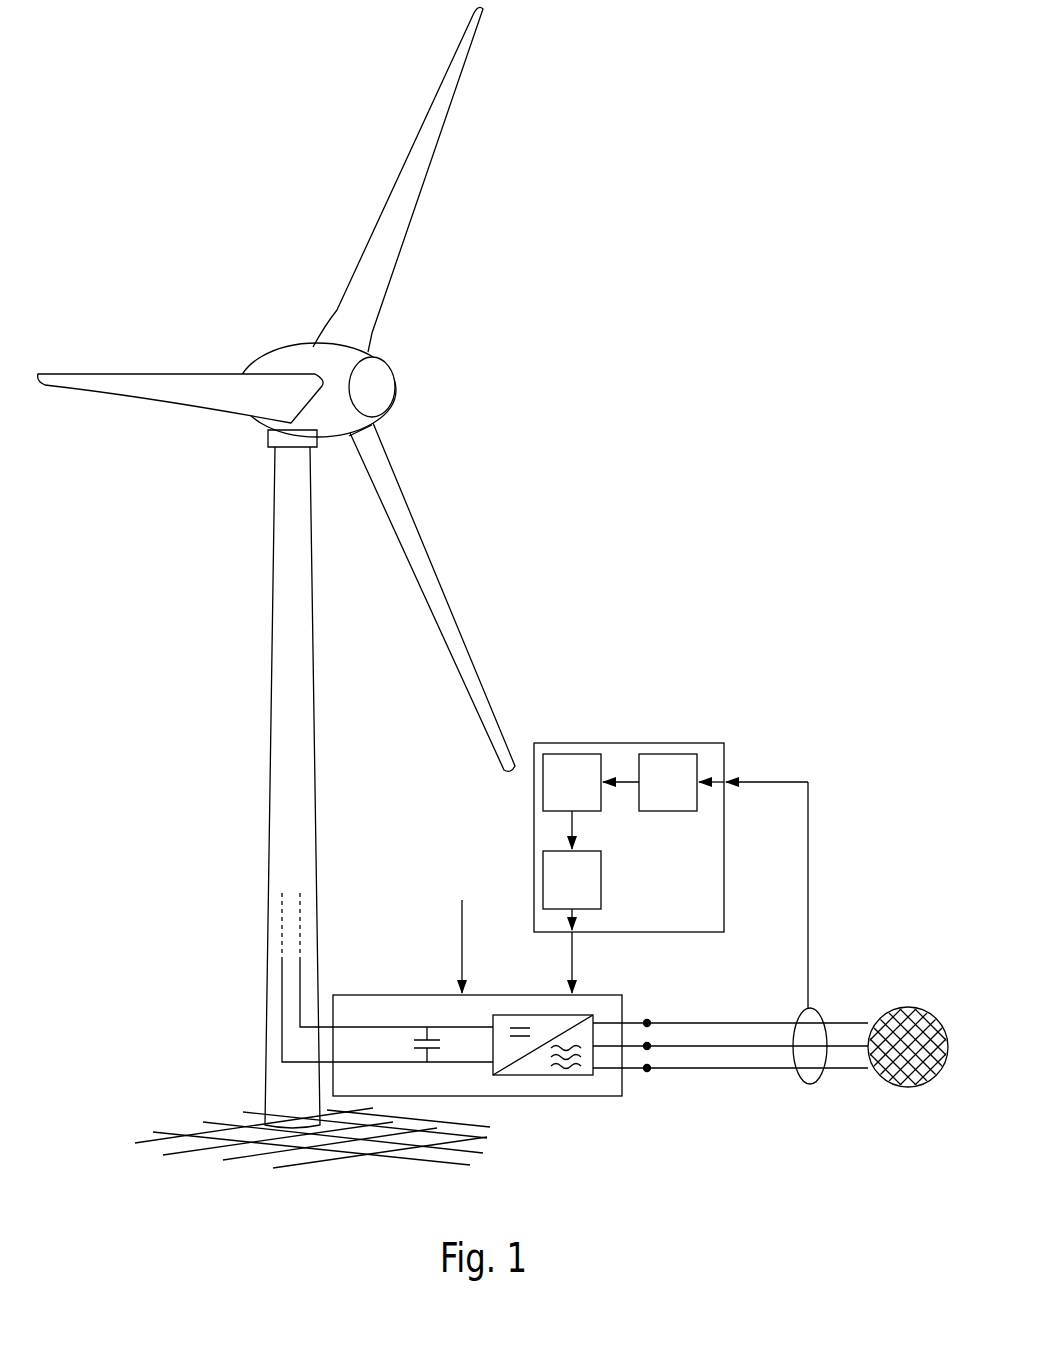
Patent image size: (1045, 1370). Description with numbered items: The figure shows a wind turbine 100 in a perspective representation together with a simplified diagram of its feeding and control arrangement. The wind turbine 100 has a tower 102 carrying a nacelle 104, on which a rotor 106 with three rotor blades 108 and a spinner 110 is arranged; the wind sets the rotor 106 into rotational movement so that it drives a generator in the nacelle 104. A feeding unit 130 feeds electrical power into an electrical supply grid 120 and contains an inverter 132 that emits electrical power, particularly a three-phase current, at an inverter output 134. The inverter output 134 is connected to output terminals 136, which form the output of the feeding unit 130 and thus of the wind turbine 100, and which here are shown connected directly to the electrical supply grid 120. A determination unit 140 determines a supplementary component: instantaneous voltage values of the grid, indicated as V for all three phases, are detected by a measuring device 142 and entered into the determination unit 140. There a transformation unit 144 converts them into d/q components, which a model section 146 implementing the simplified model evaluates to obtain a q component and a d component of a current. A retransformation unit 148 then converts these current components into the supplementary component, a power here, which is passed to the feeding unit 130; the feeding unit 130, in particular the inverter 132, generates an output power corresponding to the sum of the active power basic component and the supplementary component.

The wind turbine 100 is at (229, 516).
The tower 102 is at (282, 873).
The nacelle 104 is at (268, 345).
The rotor 106 is at (462, 308).
The rotor blades 108 is at (437, 137).
The spinner 110 is at (377, 387).
The electrical supply grid 120 is at (888, 1013).
The feeding unit 130 is at (518, 1087).
The inverter 132 is at (558, 1075).
The inverter output 134 is at (600, 1077).
The output terminals 136 is at (645, 1078).
The determination unit 140 is at (635, 742).
The measuring device 142 is at (815, 1008).
The transformation unit 144 is at (685, 762).
The model section 146 is at (578, 760).
The retransformation unit 148 is at (543, 862).